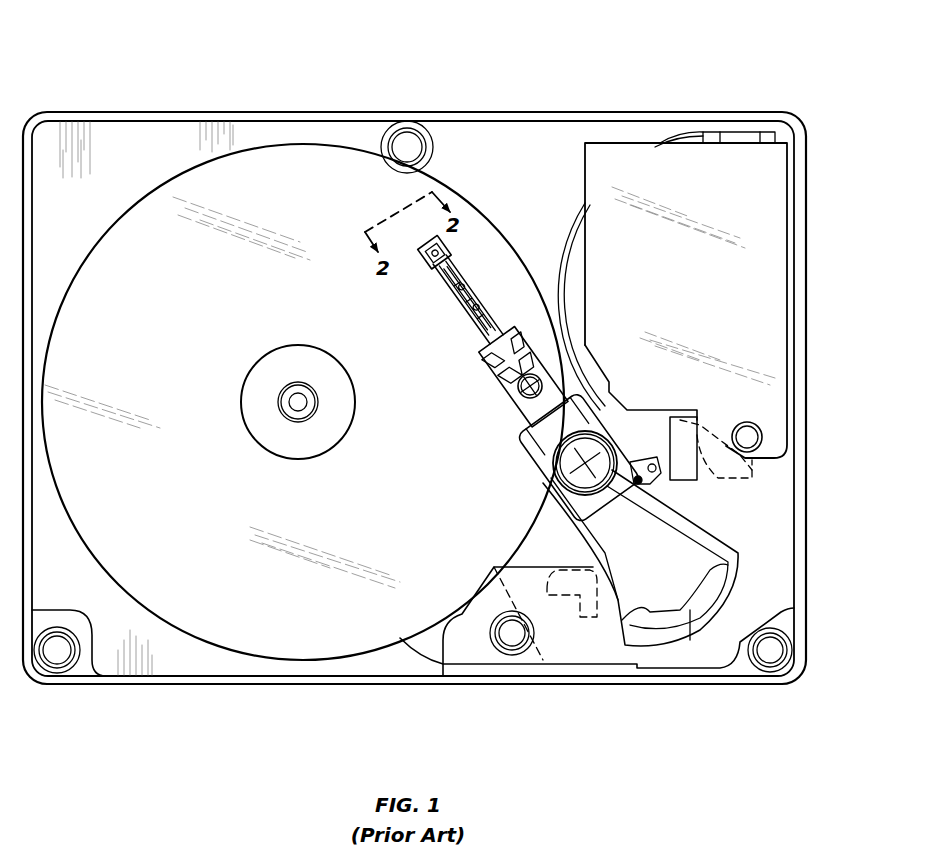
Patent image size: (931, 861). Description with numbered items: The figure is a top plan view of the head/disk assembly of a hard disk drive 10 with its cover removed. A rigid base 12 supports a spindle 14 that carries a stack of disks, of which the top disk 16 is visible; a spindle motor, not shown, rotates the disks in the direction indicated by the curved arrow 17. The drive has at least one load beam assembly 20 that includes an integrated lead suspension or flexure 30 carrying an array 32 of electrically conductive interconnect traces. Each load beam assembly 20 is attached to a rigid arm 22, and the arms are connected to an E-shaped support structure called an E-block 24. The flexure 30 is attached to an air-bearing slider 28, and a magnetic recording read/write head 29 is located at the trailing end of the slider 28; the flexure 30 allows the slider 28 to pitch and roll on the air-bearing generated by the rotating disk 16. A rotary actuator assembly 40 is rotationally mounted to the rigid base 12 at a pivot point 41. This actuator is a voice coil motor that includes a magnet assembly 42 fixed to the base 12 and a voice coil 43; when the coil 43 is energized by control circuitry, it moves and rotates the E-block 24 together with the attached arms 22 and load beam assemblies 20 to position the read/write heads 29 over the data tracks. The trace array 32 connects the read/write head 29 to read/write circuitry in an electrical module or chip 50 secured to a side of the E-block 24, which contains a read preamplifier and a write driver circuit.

The hard disk drive 10 is at (100, 52).
The rigid base 12 is at (182, 685).
The spindle 14 is at (302, 343).
The top disk 16 is at (293, 640).
The curved arrow 17 is at (125, 313).
The load beam assembly 20 is at (403, 257).
The rigid arm 22 is at (518, 393).
The E-block 24 is at (533, 452).
The air-bearing slider 28 is at (457, 243).
The read/write head 29 is at (430, 245).
The flexure 30 is at (450, 262).
The array of interconnect traces 32 is at (473, 300).
The rotary actuator assembly 40 is at (535, 526).
The pivot point 41 is at (556, 484).
The magnet assembly 42 is at (688, 463).
The voice coil 43 is at (740, 547).
The electrical module or chip 50 is at (625, 412).